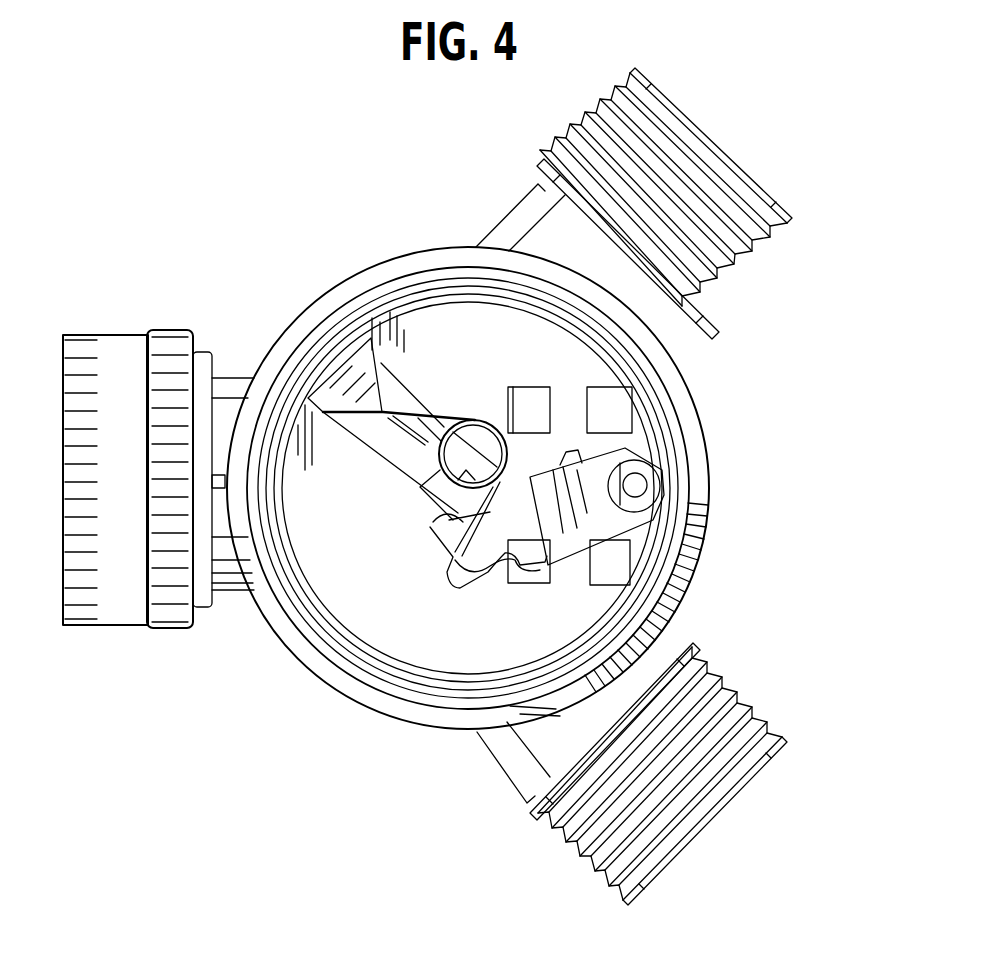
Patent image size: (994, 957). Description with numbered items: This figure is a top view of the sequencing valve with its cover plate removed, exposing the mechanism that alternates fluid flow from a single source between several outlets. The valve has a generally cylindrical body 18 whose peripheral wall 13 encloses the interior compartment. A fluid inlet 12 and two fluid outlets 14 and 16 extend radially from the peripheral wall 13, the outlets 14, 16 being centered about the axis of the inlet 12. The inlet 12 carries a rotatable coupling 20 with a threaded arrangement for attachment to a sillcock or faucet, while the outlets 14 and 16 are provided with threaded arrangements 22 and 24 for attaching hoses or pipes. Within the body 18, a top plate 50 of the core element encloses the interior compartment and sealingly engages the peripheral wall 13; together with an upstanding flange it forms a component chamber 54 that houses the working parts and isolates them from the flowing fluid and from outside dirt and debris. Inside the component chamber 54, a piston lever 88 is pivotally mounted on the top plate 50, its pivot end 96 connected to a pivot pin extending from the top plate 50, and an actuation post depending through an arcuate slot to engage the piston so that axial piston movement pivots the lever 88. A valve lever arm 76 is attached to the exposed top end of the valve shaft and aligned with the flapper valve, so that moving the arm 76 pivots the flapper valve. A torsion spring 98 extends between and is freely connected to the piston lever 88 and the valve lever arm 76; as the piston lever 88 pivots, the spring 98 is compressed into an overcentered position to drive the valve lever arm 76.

The fluid inlet 12 is at (246, 598).
The peripheral wall 13 is at (690, 582).
The fluid outlet 14 is at (521, 758).
The fluid outlet 16 is at (517, 219).
The body 18 is at (727, 512).
The coupling 20 is at (123, 597).
The threaded arrangement 22 is at (762, 695).
The threaded arrangement 24 is at (565, 133).
The top plate 50 is at (360, 612).
The component chamber 54 is at (419, 602).
The valve lever arm 76 is at (350, 372).
The piston lever 88 is at (537, 541).
The pivot end 96 is at (640, 478).
The spring 98 is at (459, 420).